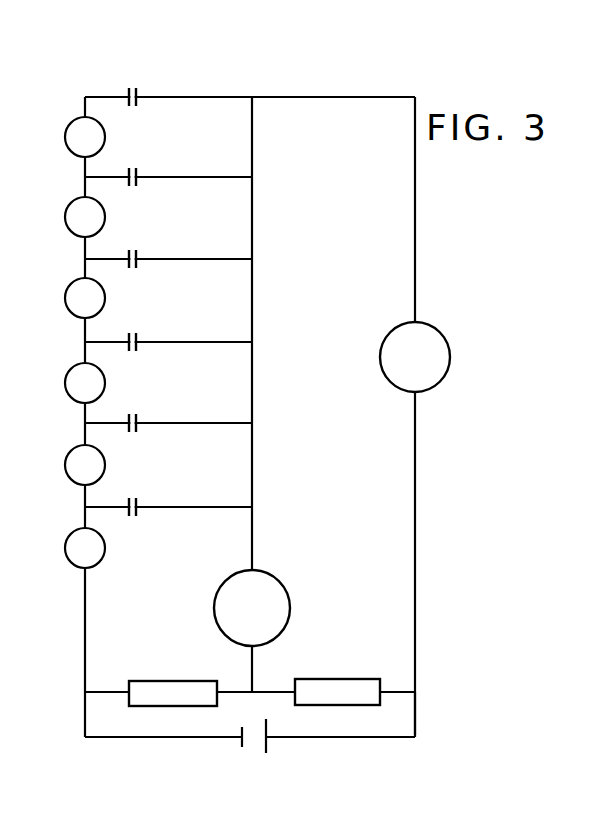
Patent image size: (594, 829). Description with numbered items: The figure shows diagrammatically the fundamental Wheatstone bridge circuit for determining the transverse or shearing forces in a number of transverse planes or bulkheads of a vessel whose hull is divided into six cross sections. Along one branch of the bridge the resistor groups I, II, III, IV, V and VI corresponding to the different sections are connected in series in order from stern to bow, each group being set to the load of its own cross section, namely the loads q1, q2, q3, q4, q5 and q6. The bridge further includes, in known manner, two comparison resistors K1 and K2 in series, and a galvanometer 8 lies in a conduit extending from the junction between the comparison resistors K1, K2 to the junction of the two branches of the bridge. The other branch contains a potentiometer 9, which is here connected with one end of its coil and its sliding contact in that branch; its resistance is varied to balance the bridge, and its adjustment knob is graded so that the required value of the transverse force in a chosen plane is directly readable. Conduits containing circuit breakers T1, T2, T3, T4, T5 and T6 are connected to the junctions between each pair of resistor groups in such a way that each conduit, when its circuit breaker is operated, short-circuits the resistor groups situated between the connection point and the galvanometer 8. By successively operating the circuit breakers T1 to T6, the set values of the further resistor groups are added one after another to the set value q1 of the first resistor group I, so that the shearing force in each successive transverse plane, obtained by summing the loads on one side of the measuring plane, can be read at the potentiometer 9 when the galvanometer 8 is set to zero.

The galvanometer 8 is at (276, 620).
The potentiometer 9 is at (388, 356).
The load of the first cross section q1 is at (85, 137).
The load of the second cross section q2 is at (85, 217).
The load of the third cross section q3 is at (85, 298).
The load of the fourth cross section q4 is at (85, 383).
The load of the fifth cross section q5 is at (85, 465).
The load of the sixth cross section q6 is at (85, 548).
The circuit breaker T1 is at (129, 108).
The circuit breaker T2 is at (129, 188).
The circuit breaker T3 is at (129, 270).
The circuit breaker T4 is at (129, 353).
The circuit breaker T5 is at (129, 434).
The circuit breaker T6 is at (129, 518).
The comparison resistor K1 is at (337, 692).
The comparison resistor K2 is at (173, 693).
The first resistor group I is at (44, 137).
The second resistor group II is at (43, 217).
The third resistor group III is at (43, 298).
The fourth resistor group IV is at (45, 383).
The fifth resistor group V is at (45, 465).
The sixth resistor group VI is at (44, 548).